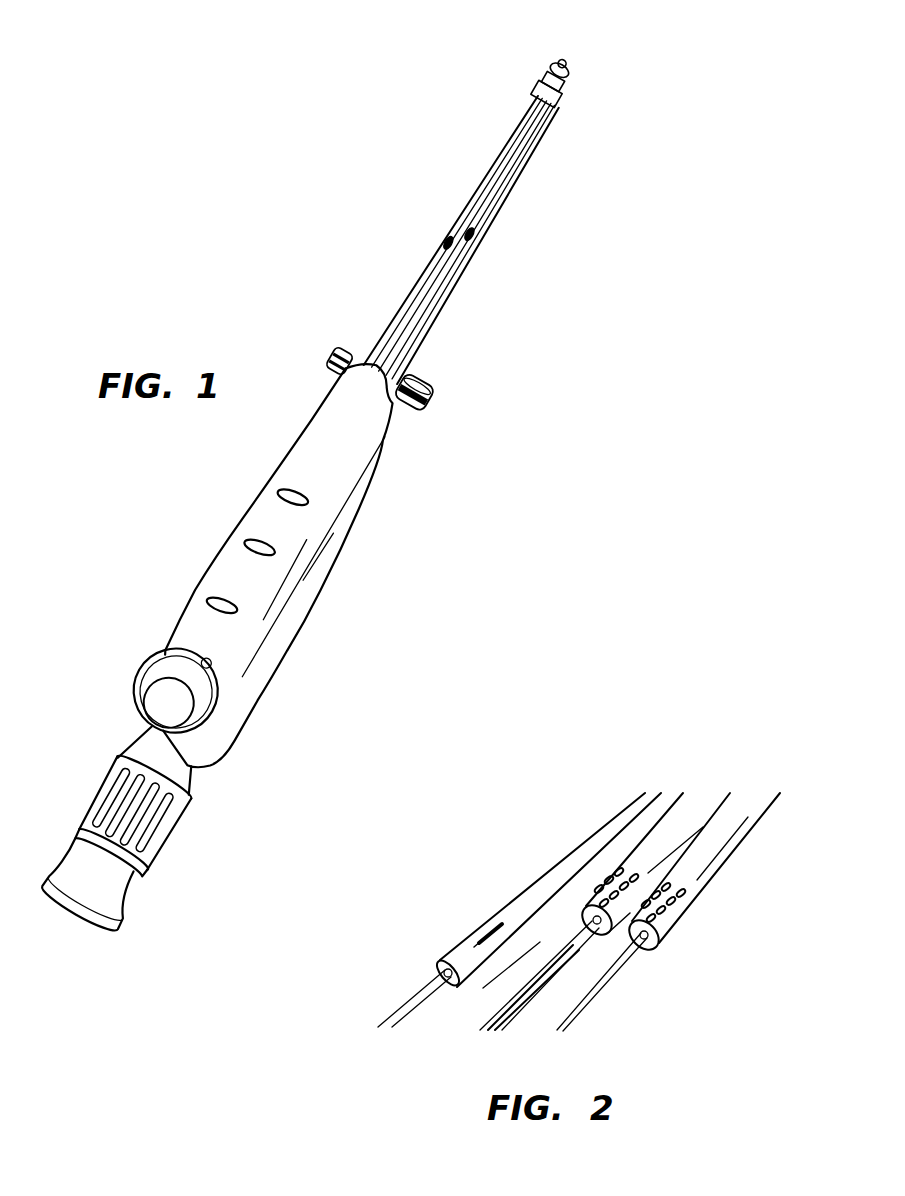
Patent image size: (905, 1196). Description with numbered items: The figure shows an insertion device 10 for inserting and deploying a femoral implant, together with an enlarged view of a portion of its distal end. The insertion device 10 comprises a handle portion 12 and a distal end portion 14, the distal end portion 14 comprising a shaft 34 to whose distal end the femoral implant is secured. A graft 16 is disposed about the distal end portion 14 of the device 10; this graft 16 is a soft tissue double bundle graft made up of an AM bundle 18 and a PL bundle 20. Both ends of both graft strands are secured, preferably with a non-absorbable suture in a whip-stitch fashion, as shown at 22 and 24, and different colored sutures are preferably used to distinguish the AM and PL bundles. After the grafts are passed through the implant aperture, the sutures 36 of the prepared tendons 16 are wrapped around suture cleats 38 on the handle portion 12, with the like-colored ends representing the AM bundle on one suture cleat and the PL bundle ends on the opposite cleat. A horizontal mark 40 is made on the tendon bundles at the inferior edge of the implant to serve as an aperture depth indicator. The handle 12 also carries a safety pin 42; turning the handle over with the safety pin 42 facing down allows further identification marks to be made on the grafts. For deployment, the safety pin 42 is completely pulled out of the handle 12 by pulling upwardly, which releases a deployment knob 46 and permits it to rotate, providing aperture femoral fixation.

In FIG. 1, the insertion device 10 is at (200, 535).
In FIG. 1, the handle portion 12 is at (326, 615).
In FIG. 1, the distal end portion 14 is at (393, 237).
In FIG. 1, the graft 16 is at (577, 133).
In FIG. 2, the graft 16 is at (612, 834).
In FIG. 1, the AM bundle 18 is at (470, 235).
In FIG. 2, the AM bundle 18 is at (563, 863).
In FIG. 1, the PL bundle 20 is at (515, 178).
In FIG. 2, the PL bundle 20 is at (687, 810).
In FIG. 2, the whip-stitch suture securing graft end 22 is at (483, 930).
In FIG. 2, the whip-stitch suture securing graft end 24 is at (680, 905).
In FIG. 1, the shaft 34 is at (410, 292).
In FIG. 2, the shaft 34 is at (483, 988).
In FIG. 1, the sutures 36 is at (393, 320).
In FIG. 2, the sutures 36 is at (403, 1008).
In FIG. 1, the suture cleats 38 is at (337, 368).
In FIG. 1, the horizontal mark 40 is at (505, 145).
In FIG. 1, the safety pin 42 is at (150, 670).
In FIG. 1, the deployment knob 46 is at (178, 830).